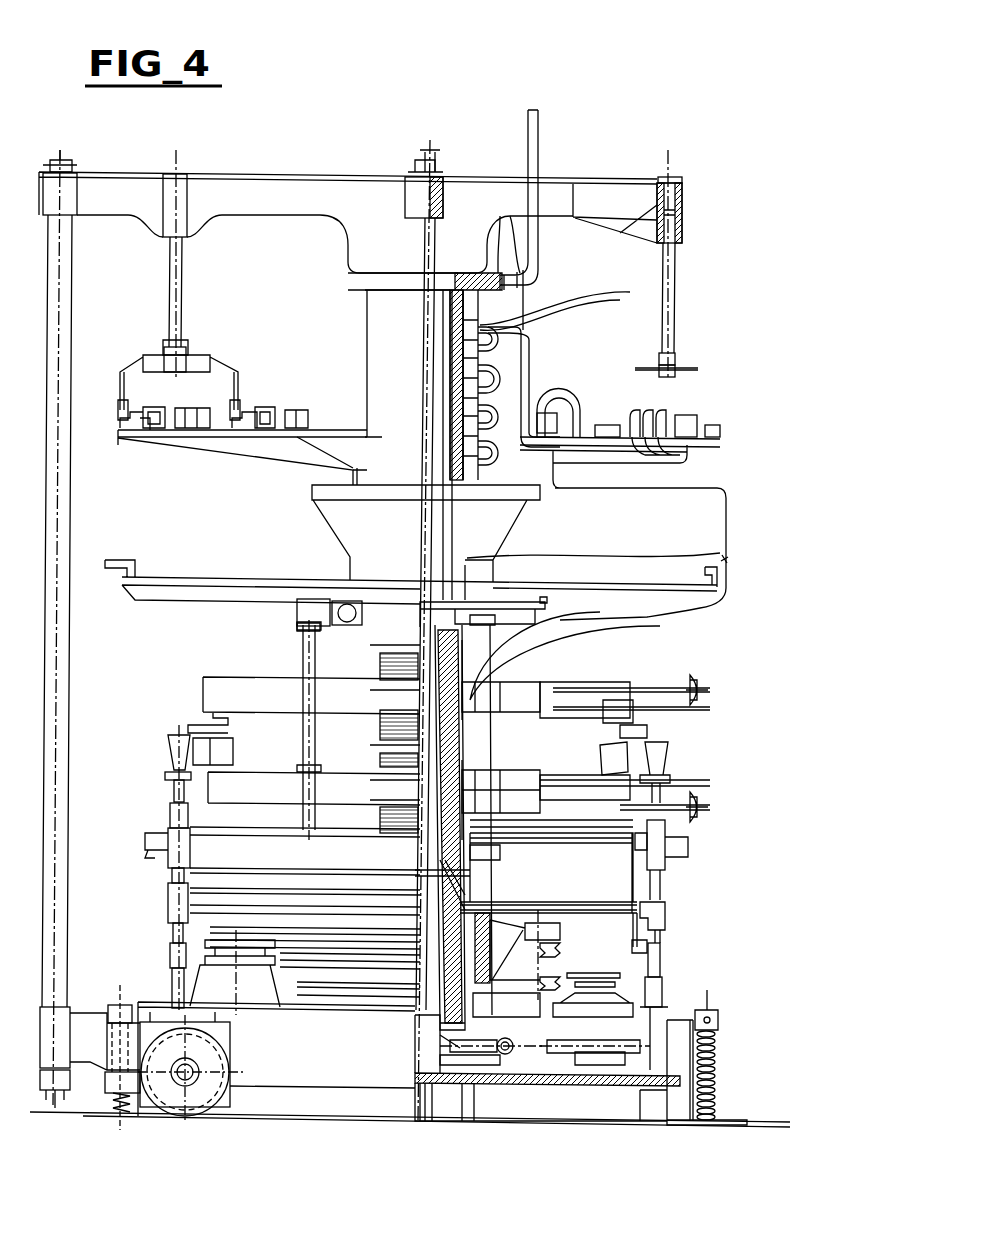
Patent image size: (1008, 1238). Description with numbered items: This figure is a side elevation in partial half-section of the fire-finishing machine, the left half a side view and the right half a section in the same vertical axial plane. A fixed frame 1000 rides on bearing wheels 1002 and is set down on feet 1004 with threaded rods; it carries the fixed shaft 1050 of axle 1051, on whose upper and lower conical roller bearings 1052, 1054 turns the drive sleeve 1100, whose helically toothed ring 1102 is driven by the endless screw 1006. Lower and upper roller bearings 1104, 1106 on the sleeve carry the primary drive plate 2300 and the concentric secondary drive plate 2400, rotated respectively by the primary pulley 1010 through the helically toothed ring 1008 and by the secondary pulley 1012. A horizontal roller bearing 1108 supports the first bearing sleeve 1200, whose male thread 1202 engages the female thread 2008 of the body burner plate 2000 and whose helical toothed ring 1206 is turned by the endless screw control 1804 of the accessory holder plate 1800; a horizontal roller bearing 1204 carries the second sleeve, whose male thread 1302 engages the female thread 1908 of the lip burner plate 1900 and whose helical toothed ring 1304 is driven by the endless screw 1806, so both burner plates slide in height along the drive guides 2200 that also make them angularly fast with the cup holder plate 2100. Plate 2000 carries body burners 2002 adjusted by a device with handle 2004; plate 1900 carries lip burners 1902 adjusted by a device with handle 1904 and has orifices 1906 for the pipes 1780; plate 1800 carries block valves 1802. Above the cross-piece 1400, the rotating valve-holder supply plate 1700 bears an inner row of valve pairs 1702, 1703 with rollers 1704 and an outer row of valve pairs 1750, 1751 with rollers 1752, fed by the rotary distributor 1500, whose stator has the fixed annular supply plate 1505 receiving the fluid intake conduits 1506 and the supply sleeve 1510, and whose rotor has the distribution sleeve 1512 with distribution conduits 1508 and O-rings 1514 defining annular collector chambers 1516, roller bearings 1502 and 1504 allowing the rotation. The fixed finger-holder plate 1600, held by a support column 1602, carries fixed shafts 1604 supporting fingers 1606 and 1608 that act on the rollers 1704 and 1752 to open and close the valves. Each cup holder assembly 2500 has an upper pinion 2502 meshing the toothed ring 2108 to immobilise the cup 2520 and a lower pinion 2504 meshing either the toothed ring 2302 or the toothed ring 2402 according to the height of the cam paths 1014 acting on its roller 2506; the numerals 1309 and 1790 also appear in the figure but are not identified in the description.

The fixed frame 1000 is at (537, 1083).
The bearing wheels 1002 is at (189, 1110).
The feet 1004 is at (120, 1113).
The endless screw 1006 is at (503, 1052).
The helically toothed ring 1008 is at (635, 1050).
The primary pulley 1010 is at (592, 982).
The secondary pulley 1012 is at (240, 947).
The cam paths 1014 is at (706, 1032).
The fixed shaft 1050 is at (477, 310).
The axle 1051 is at (427, 152).
The upper conical roller bearing 1052 is at (342, 578).
The lower conical roller bearing 1054 is at (448, 1046).
The drive sleeve 1100 is at (455, 985).
The helically toothed ring 1102 is at (465, 1083).
The lower roller bearing 1104 is at (462, 1021).
The upper roller bearing 1106 is at (512, 905).
The horizontal roller bearing 1108 is at (465, 872).
The first concentric bearing sleeve 1200 is at (500, 822).
The outer male thread 1202 is at (360, 818).
The horizontal roller bearing 1204 is at (560, 770).
The helical toothed ring 1206 is at (480, 613).
The male thread 1302 is at (367, 727).
The helical toothed ring 1304 is at (370, 652).
The adjusting cylinder 1309 is at (600, 705).
The cross-piece 1400 is at (735, 558).
The rotary distributor 1500 is at (385, 345).
The roller bearing 1502 is at (490, 495).
The roller bearing 1504 is at (672, 178).
The fixed annular supply plate 1505 is at (430, 233).
The fluid intake conduits 1506 is at (533, 152).
The distribution conduits 1508 is at (520, 325).
The supply sleeve 1510 is at (450, 372).
The outer cylindrical distribution sleeve 1512 is at (478, 312).
The O-rings 1514 is at (540, 350).
The annular collector chambers 1516 is at (450, 395).
The finger-holder plate 1600 is at (332, 175).
The support column 1602 is at (62, 531).
The fixed shafts 1604 is at (176, 303).
The fingers 1606 is at (121, 398).
The fingers 1608 is at (233, 402).
The valve-holder supply plate 1700 is at (320, 414).
The valve 1702 is at (250, 433).
The valve 1703 is at (640, 405).
The rollers 1704 is at (670, 417).
The valve 1750 is at (142, 437).
The valve 1751 is at (700, 418).
The rollers 1752 is at (720, 432).
The pipes 1780 is at (727, 525).
The inclined surface 1790 is at (250, 448).
The accessory-holder plate 1800 is at (203, 578).
The block valves 1802 is at (727, 572).
The endless screw control 1804 is at (298, 624).
The endless screw 1806 is at (480, 640).
The lip burner holder plate 1900 is at (218, 690).
The lip burners 1902 is at (652, 733).
The device with handle 1904 is at (700, 698).
The orifices 1906 is at (545, 712).
The female thread 1908 is at (520, 705).
The body burner holder plate 2000 is at (258, 780).
The body burners 2002 is at (203, 753).
The device with handle 2004 is at (697, 795).
The female thread 2008 is at (470, 845).
The cup holder plate 2100 is at (203, 860).
The toothed ring 2108 is at (665, 870).
The drive guides 2200 is at (310, 760).
The primary drive plate 2300 is at (170, 927).
The toothed ring 2302 is at (662, 945).
The secondary drive plate 2400 is at (182, 958).
The toothed ring 2402 is at (655, 950).
The cup holder assemblies 2500 is at (684, 919).
The upper pinion 2502 is at (658, 895).
The lower pinion 2504 is at (650, 945).
The roller 2506 is at (662, 998).
The cups 2520 is at (172, 780).